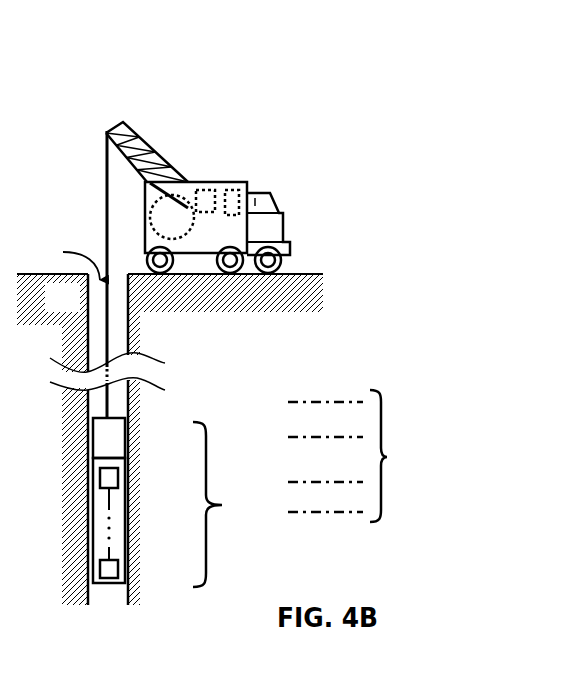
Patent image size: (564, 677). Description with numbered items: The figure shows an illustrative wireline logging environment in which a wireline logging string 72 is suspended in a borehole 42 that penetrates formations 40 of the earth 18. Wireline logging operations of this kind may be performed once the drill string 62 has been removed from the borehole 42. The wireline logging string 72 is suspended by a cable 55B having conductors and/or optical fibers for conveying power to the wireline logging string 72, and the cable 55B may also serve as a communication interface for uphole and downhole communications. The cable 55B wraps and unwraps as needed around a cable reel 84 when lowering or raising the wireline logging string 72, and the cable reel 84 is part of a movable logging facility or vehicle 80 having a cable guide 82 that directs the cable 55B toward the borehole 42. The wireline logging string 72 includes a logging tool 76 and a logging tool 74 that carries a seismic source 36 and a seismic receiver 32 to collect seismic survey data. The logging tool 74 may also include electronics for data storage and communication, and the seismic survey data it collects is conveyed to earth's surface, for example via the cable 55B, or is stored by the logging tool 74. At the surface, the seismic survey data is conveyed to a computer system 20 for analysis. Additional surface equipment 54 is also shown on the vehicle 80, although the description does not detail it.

The earth 18 is at (73, 308).
The computer system 20 is at (232, 192).
The seismic receiver 32 is at (118, 568).
The seismic source 36 is at (118, 478).
The formations 40 is at (354, 456).
The borehole 42 is at (132, 327).
The processor 54 is at (203, 187).
The cable 55B is at (106, 225).
The drill string 62 is at (64, 258).
The wireline logging string 72 is at (224, 504).
The logging tool 74 is at (125, 518).
The logging tool 76 is at (125, 443).
The movable logging facility or vehicle 80 is at (285, 223).
The cable guide 82 is at (140, 130).
The cable reel 84 is at (158, 227).